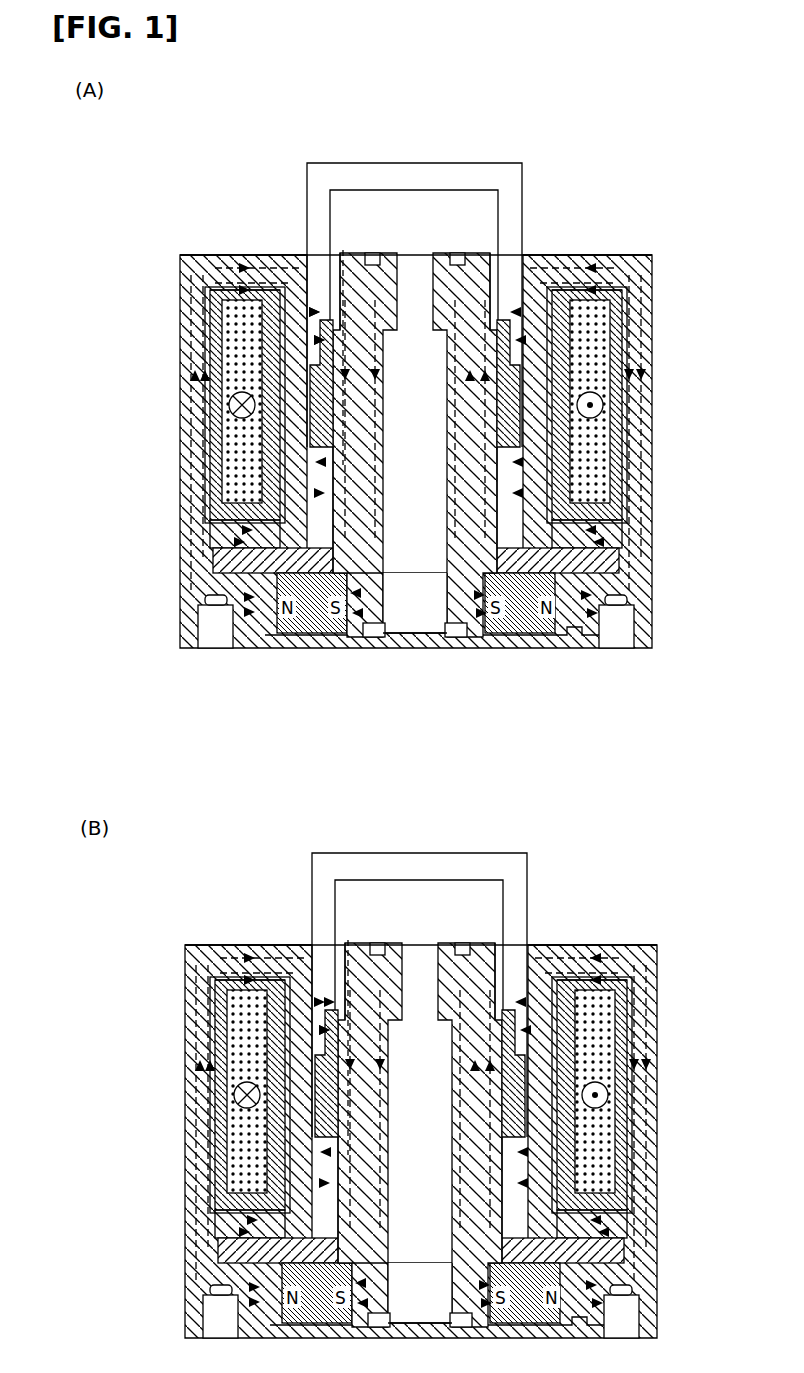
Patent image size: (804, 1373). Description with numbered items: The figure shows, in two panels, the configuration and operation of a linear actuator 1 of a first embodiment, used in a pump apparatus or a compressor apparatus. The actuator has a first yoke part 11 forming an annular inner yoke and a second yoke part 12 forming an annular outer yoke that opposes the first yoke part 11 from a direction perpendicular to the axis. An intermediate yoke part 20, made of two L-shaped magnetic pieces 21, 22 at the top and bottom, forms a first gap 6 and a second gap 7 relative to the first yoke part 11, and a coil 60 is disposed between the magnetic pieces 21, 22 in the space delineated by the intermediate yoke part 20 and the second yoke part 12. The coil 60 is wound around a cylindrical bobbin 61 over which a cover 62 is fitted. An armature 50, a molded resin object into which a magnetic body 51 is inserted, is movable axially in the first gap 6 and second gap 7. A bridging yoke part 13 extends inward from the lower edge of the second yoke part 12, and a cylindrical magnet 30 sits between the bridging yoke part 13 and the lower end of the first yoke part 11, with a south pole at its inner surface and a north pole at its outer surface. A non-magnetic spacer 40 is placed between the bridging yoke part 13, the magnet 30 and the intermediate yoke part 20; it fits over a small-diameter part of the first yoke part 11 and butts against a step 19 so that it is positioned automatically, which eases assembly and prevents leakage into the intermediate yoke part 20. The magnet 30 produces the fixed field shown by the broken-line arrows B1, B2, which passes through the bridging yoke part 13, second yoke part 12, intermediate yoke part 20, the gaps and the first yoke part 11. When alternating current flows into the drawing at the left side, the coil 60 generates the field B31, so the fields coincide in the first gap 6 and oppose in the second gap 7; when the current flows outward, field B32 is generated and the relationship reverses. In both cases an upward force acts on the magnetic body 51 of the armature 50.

The linear actuator 1 is at (176, 204).
The first gap 6 is at (350, 332).
The second gap 7 is at (322, 463).
The first yoke part 11 is at (370, 417).
The second yoke part 12 is at (183, 370).
The bridging yoke part 13 is at (250, 636).
The step 19 is at (355, 522).
The intermediate yoke part 20 is at (258, 253).
The magnetic piece 21 is at (238, 253).
The magnetic piece 22 is at (220, 540).
The magnet 30 is at (300, 634).
The spacer 40 is at (215, 566).
The armature 50 is at (395, 165).
The magnetic body 51 is at (335, 390).
The coil 60 is at (215, 448).
The bobbin 61 is at (225, 290).
The cover 62 is at (210, 327).
The magnetic field B1 is at (343, 255).
The magnetic field B2 is at (385, 570).
The magnetic field B31 is at (263, 285).
The magnetic field B32 is at (355, 1035).